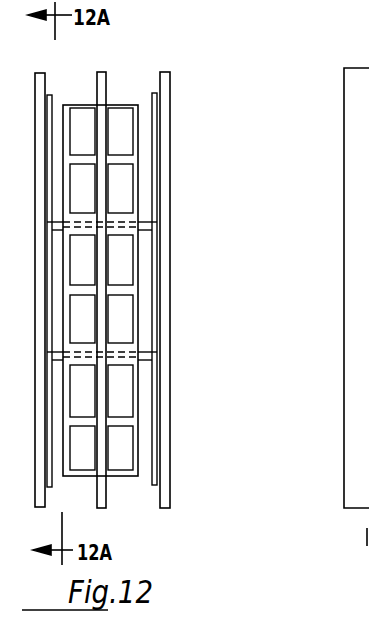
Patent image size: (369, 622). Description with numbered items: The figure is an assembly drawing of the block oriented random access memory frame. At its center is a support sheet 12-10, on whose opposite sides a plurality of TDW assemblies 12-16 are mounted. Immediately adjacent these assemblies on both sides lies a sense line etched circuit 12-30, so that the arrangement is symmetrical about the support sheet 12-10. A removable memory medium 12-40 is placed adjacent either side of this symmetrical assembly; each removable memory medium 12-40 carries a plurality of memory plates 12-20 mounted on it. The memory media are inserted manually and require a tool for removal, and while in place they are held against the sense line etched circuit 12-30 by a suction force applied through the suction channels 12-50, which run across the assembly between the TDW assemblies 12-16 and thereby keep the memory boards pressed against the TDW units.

The support sheet 12-10 is at (103, 75).
The sense line etched circuit 12-30 is at (63, 107).
The memory plate 12-20 is at (157, 163).
The suction channel 12-50 is at (122, 226).
The removable memory medium 12-40 is at (38, 90).
The TDW assembly 12-16 is at (92, 389).